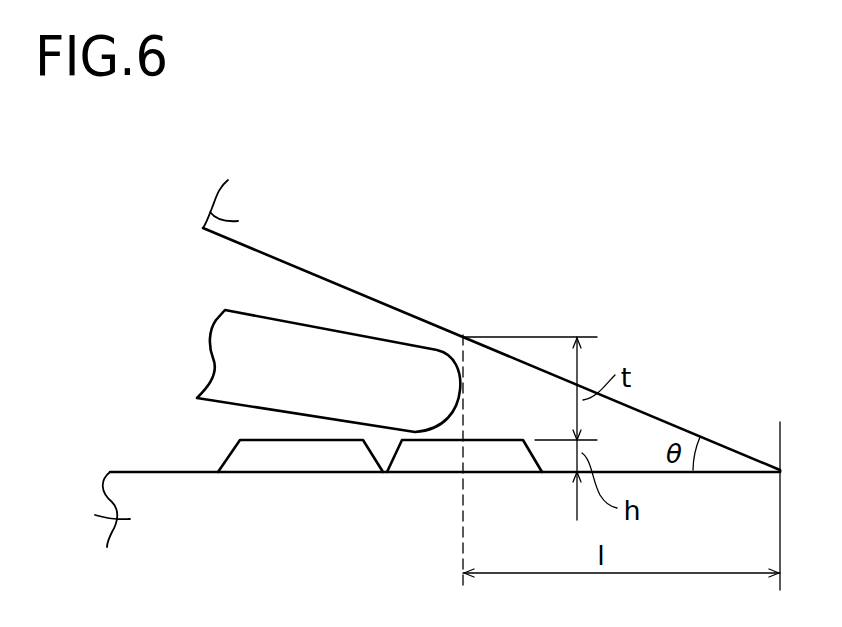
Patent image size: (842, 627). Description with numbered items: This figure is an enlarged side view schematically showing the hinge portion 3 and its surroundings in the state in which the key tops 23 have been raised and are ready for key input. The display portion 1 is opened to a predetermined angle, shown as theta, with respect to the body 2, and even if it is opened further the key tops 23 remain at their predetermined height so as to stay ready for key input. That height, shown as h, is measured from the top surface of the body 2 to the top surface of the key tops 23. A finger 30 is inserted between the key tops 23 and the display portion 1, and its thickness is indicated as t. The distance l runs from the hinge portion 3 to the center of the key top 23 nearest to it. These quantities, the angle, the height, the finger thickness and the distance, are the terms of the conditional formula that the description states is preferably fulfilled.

The display portion 1 is at (210, 212).
The body 2 is at (112, 521).
The hinge portion 3 is at (780, 470).
The finger 30 is at (403, 362).
The key tops 23 is at (432, 458).